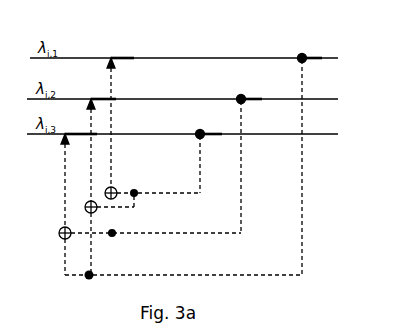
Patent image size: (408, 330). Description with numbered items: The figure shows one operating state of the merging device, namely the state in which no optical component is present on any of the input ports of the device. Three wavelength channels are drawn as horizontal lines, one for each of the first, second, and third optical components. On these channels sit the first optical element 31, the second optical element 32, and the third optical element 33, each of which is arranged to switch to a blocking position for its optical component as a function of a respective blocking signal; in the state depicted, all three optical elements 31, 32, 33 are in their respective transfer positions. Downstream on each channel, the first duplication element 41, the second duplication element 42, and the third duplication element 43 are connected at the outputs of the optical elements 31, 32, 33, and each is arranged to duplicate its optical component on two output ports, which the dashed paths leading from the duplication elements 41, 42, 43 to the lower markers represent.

The first optical element 31 is at (133, 58).
The second optical element 32 is at (114, 99).
The third optical element 33 is at (96, 134).
The first duplication element 41 is at (302, 57).
The second duplication element 42 is at (240, 97).
The third duplication element 43 is at (202, 133).